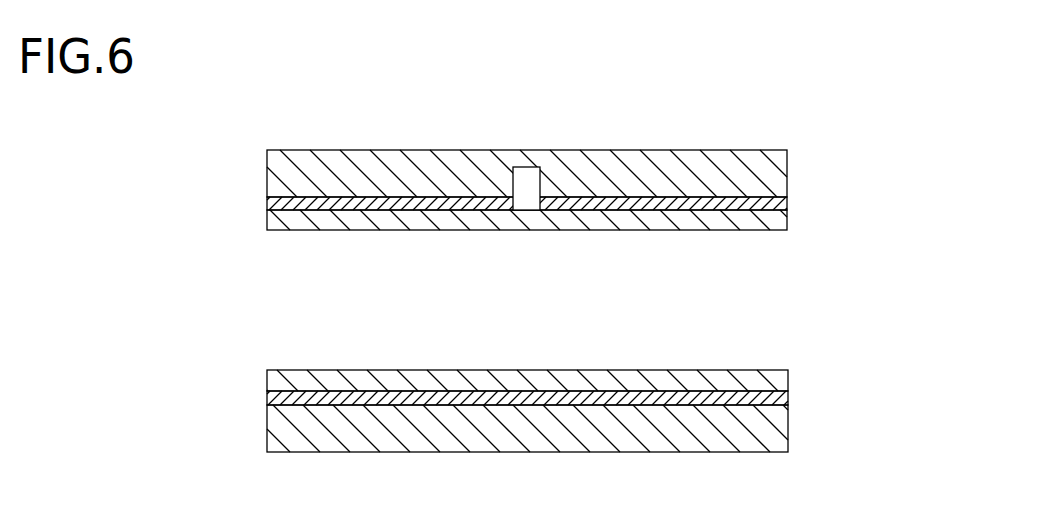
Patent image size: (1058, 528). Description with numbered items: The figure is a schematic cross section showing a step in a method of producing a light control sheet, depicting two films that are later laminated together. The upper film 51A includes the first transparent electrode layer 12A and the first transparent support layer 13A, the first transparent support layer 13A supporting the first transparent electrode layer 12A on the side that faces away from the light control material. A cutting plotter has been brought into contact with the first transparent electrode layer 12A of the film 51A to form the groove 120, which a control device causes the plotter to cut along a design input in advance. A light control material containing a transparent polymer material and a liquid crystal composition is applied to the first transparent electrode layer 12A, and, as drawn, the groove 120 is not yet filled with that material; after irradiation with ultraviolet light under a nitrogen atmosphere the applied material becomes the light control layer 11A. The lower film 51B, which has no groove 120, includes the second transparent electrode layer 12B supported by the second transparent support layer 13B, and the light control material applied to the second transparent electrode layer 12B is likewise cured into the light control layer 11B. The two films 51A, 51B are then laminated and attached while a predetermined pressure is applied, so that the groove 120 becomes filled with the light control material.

The film 51A is at (600, 216).
The first transparent support layer 13A is at (792, 173).
The first transparent electrode layer 12A is at (792, 202).
The light control layer 11A is at (792, 223).
The groove 120 is at (524, 212).
The film 51B is at (455, 406).
The light control layer 11B is at (264, 379).
The second transparent electrode layer 12B is at (264, 395).
The second transparent support layer 13B is at (264, 425).